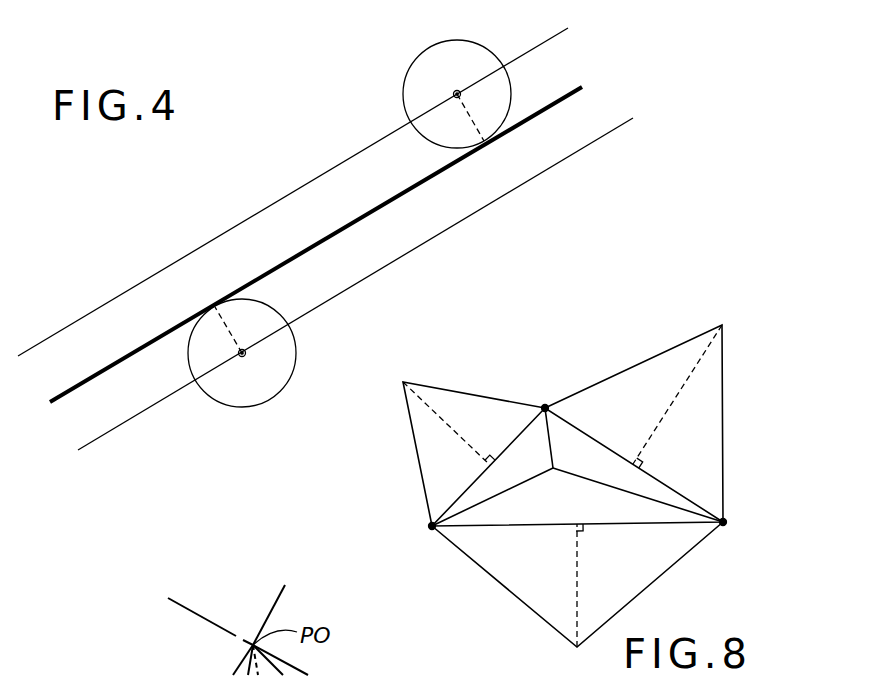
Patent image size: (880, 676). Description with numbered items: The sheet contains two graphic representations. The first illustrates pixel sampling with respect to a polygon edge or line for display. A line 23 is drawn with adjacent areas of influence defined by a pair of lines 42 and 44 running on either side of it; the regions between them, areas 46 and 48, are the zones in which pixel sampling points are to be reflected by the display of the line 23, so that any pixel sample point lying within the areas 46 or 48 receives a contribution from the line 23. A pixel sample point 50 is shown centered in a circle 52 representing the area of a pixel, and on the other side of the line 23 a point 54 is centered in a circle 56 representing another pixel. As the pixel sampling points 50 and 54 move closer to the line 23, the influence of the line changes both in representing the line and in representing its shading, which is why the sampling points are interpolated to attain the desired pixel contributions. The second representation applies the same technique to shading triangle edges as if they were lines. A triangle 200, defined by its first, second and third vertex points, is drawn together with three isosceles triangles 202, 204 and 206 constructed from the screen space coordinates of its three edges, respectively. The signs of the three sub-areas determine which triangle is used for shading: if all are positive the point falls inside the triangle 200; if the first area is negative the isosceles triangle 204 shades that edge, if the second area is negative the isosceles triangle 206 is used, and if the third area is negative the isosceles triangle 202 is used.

In FIG. 4, the line 23 is at (432, 176).
In FIG. 4, the line 42 is at (203, 244).
In FIG. 4, the line 44 is at (387, 265).
In FIG. 4, the area 46 is at (271, 241).
In FIG. 4, the area 48 is at (365, 249).
In FIG. 4, the pixel sample point 50 is at (242, 353).
In FIG. 4, the circle 52 is at (297, 343).
In FIG. 4, the point 54 is at (460, 91).
In FIG. 4, the circle 56 is at (512, 80).
In FIG. 8, the triangle 200 is at (650, 507).
In FIG. 8, the isosceles triangle 202 is at (486, 391).
In FIG. 8, the isosceles triangle 204 is at (495, 590).
In FIG. 8, the isosceles triangle 206 is at (733, 424).